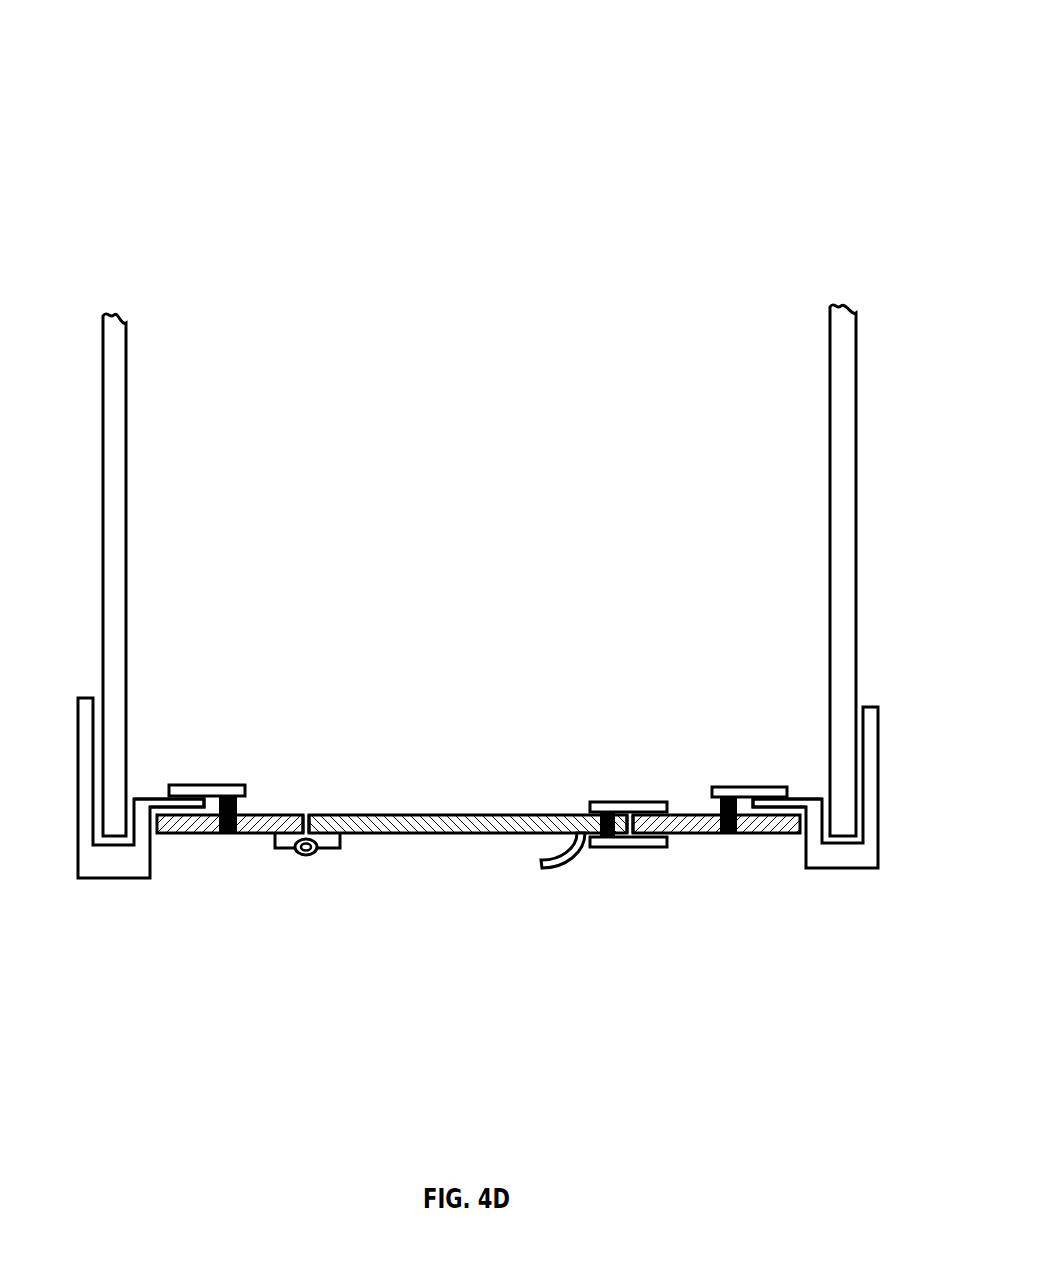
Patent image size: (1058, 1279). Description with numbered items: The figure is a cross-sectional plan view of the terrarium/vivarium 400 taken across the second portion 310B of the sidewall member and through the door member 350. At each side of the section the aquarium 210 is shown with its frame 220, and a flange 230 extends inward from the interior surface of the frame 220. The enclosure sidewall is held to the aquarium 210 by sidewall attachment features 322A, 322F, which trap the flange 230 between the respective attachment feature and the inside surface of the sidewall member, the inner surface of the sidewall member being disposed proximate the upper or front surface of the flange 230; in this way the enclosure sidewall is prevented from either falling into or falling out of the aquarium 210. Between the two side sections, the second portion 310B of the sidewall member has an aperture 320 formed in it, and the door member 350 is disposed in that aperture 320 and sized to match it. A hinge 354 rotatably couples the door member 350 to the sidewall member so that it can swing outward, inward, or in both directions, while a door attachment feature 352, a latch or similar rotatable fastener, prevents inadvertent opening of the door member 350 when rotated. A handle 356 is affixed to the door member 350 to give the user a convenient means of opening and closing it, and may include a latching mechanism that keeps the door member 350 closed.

The terrarium/vivarium 400 is at (867, 43).
The aquarium 210 is at (100, 474).
The frame 220 is at (105, 880).
The flange 230 is at (155, 800).
The second portion of the sidewall member 310B is at (296, 813).
The aperture 320 is at (310, 813).
The sidewall attachment feature 322A is at (218, 793).
The sidewall attachment feature 322F is at (773, 793).
The door member 350 is at (478, 815).
The door attachment feature 352 is at (632, 800).
The hinge 354 is at (306, 855).
The handle 356 is at (543, 868).